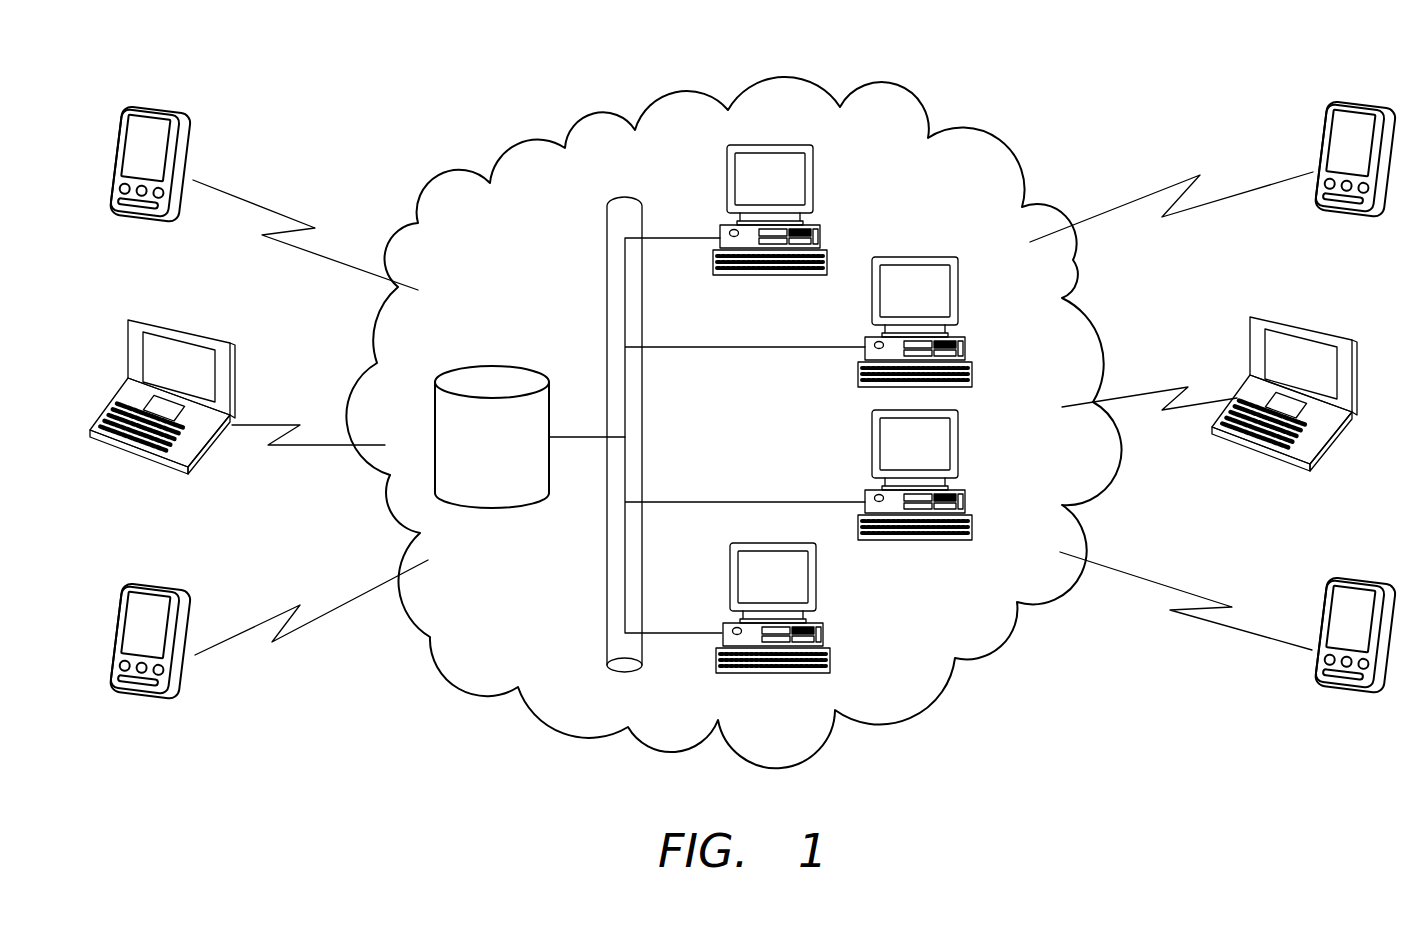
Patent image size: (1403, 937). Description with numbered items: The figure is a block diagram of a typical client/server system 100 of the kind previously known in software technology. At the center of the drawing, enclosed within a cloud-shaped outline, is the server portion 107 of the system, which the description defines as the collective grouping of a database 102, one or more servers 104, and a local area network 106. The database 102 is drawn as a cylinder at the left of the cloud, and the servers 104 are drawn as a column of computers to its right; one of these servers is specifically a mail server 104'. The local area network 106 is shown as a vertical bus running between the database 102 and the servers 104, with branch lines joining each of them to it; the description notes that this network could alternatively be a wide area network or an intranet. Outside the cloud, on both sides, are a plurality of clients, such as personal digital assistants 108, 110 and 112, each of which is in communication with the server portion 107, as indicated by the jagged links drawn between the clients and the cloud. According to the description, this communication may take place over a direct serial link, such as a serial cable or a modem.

The client/server system 100 is at (447, 60).
The database 102 is at (512, 368).
The server 104 is at (816, 202).
The mail server 104' is at (951, 322).
The local area network 106 is at (642, 416).
The server portion 107 is at (697, 90).
The personal digital assistant 108 is at (113, 148).
The personal digital assistant 110 is at (167, 325).
The personal digital assistant 112 is at (157, 583).